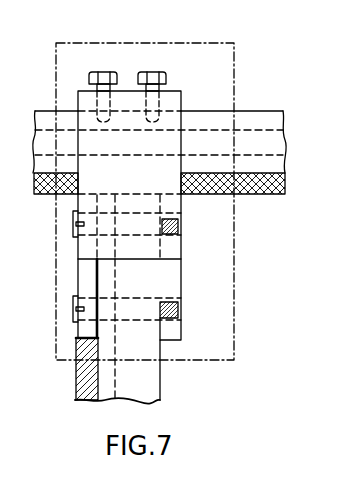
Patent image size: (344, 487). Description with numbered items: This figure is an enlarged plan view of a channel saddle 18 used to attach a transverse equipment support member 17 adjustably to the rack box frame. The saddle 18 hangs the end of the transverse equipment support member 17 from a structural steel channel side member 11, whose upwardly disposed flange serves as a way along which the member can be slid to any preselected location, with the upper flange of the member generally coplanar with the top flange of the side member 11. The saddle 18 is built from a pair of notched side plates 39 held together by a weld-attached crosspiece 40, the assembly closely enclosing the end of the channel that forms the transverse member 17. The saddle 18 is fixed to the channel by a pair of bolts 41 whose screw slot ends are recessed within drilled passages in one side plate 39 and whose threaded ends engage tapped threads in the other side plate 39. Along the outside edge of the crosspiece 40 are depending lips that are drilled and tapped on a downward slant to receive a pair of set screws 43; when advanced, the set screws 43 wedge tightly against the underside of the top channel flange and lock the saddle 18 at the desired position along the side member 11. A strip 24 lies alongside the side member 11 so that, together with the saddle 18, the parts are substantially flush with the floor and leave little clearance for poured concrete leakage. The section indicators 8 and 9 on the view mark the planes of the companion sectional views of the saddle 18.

The section line 8- 8 is at (244, 45).
The section line 9- 9 is at (40, 252).
The channel side member 11 is at (47, 113).
The transverse equipment support member 17 is at (146, 378).
The saddle 18 is at (177, 146).
The strip 24 is at (284, 192).
The notched side plate 39 is at (163, 284).
The crosspiece 40 is at (175, 210).
The bolt 41 is at (73, 217).
The set screw 43 is at (151, 76).